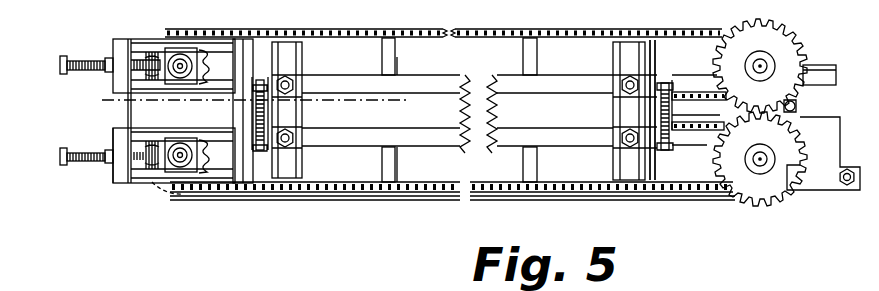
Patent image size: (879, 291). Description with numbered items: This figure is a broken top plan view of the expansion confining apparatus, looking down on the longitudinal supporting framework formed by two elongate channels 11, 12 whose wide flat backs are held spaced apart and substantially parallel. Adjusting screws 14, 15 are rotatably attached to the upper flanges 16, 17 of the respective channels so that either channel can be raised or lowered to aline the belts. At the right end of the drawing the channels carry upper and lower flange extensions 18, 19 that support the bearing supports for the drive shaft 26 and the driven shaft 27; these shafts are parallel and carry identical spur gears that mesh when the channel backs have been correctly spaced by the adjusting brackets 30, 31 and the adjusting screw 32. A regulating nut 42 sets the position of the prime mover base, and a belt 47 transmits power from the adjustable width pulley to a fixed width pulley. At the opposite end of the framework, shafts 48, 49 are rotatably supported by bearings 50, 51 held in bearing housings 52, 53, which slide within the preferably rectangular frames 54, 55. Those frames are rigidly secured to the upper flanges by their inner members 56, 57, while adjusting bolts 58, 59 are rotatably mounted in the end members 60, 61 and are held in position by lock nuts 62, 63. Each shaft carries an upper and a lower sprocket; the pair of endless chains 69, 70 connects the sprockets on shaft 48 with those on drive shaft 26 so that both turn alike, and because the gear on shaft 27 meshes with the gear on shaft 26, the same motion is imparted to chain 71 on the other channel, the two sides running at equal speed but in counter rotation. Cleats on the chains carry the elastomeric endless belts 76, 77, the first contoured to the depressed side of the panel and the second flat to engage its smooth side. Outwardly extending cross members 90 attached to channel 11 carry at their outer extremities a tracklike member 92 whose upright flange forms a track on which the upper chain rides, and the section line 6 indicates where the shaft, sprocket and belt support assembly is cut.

The section line 6- 6 is at (410, 235).
The channel 11 is at (552, 143).
The channel 12 is at (550, 73).
The adjusting screw 14 is at (285, 143).
The adjusting screw 15 is at (288, 83).
The upper flange 16 is at (347, 140).
The upper flange 17 is at (343, 83).
The upper flange extension 18 is at (705, 143).
The lower flange extension 19 is at (707, 75).
The drive shaft 26 is at (768, 167).
The driven shaft 27 is at (768, 60).
The adjusting bracket 30 is at (682, 140).
The adjusting bracket 31 is at (657, 77).
The adjusting screw 32 is at (660, 153).
The regulating nut 42 is at (845, 187).
The belt 47 is at (810, 65).
The shaft 48 is at (173, 184).
The shaft 49 is at (182, 63).
The bearing 50 is at (183, 170).
The bearing 51 is at (230, 32).
The bearing housing 52 is at (179, 172).
The bearing housing 53 is at (175, 50).
The frame 54 is at (150, 176).
The frame 55 is at (117, 38).
The inner member 56 is at (240, 177).
The inner member 57 is at (243, 58).
The adjusting bolt 58 is at (65, 145).
The adjusting bolt 59 is at (62, 58).
The end member 60 is at (118, 170).
The end member 61 is at (117, 57).
The lock nut 62 is at (107, 163).
The lock nut 63 is at (110, 70).
The chain 69 is at (153, 168).
The chain 70 is at (150, 56).
The chain 71 is at (680, 77).
The endless belt 76 is at (353, 197).
The endless belt 77 is at (412, 30).
The cross member 90 is at (397, 57).
The tracklike member 92 is at (462, 32).